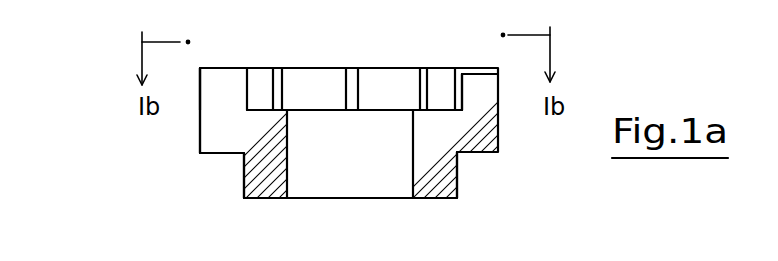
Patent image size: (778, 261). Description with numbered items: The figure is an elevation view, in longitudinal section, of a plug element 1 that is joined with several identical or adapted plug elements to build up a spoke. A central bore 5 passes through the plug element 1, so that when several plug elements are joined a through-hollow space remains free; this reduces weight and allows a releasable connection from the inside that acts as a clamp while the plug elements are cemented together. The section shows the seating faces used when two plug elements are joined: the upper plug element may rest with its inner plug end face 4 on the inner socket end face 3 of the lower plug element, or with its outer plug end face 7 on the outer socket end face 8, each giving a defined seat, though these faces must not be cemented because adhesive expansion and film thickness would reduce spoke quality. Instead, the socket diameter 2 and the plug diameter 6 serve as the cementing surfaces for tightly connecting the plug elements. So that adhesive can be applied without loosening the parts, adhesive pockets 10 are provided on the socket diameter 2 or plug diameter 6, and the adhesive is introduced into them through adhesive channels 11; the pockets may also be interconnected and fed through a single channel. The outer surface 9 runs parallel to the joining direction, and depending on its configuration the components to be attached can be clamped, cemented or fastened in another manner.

The plug element 1 is at (478, 152).
The socket diameter 2 is at (385, 70).
The inner socket end face 3 is at (447, 104).
The inner plug end face 4 is at (268, 199).
The central bore 5 is at (365, 190).
The plug diameter 6 is at (457, 182).
The outer plug end face 7 is at (220, 154).
The outer socket end face 8 is at (219, 68).
The outer surface 9 is at (200, 133).
The adhesive pockets 10 is at (420, 80).
The adhesive channels 11 is at (475, 70).